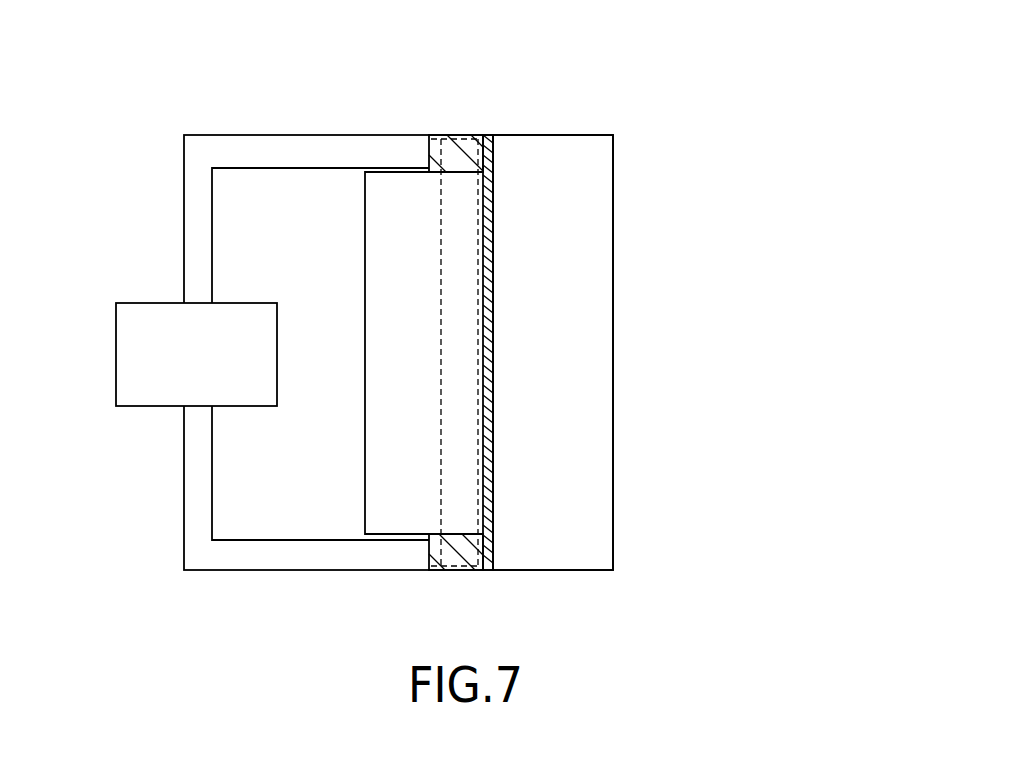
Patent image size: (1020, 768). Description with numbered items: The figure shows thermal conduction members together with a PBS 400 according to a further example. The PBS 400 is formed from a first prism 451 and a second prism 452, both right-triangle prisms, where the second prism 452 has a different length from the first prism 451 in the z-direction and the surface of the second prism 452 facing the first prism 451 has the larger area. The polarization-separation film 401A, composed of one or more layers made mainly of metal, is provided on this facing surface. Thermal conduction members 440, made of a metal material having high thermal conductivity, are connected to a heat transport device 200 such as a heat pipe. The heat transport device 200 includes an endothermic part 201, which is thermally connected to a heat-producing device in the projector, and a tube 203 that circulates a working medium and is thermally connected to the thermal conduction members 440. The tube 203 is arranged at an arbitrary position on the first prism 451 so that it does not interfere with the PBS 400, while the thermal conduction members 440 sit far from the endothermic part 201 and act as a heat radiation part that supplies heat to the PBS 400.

The heat transport device 200 is at (265, 126).
The endothermic part 201 is at (116, 355).
The tube 203 is at (342, 134).
The PBS 400 is at (616, 206).
The polarization-separation film 401A is at (487, 134).
The thermal conduction members 440 is at (445, 133).
The first prism 451 is at (382, 280).
The second prism 452 is at (597, 280).